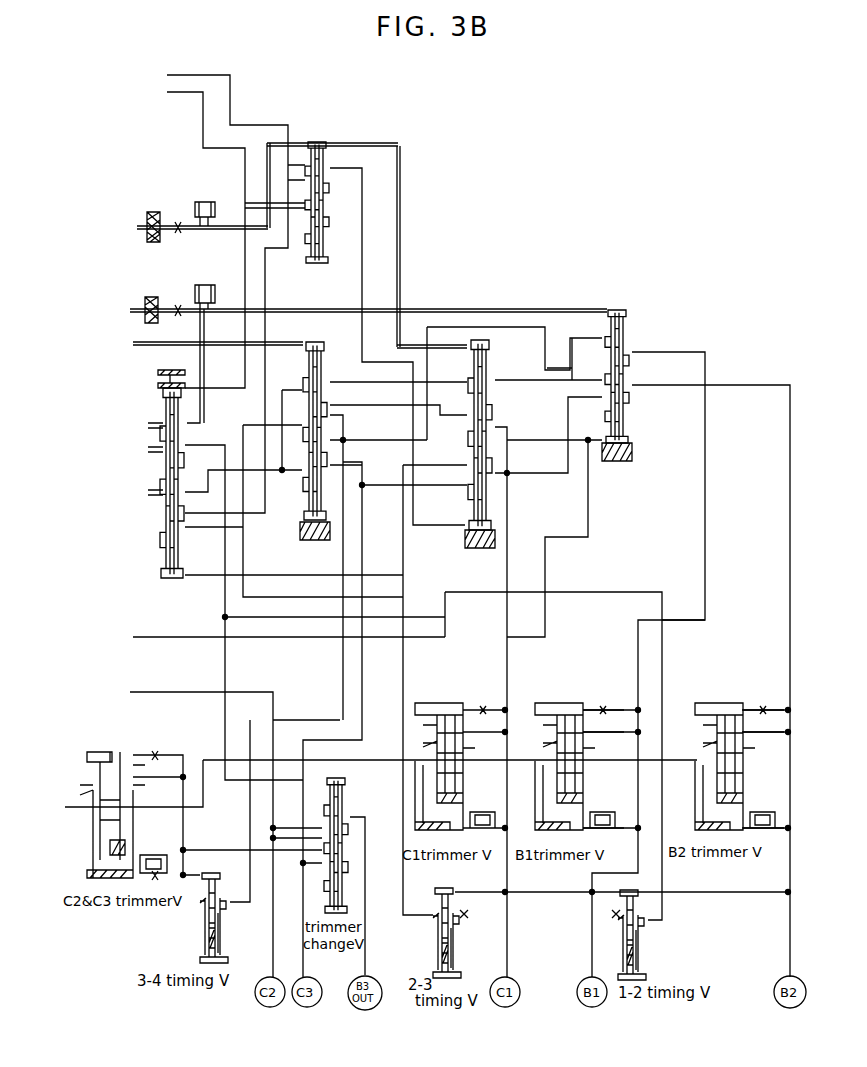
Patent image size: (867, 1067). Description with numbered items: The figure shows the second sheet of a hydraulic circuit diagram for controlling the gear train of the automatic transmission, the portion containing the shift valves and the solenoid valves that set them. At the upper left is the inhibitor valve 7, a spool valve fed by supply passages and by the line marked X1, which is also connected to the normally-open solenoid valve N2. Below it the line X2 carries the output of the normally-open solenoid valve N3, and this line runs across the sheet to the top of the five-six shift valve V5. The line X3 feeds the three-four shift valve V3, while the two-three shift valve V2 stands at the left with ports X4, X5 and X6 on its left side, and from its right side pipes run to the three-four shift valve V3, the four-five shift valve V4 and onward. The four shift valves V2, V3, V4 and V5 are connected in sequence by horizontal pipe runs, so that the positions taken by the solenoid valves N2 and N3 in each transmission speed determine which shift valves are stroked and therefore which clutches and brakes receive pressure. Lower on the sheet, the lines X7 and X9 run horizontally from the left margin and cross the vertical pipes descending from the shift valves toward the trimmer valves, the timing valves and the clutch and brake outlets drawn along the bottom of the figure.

The inhibitor valve 7 is at (323, 143).
The hydraulic pressure port X1 is at (138, 220).
The hydraulic pressure port X2 is at (138, 304).
The hydraulic pressure port X3 is at (133, 343).
The hydraulic pressure port X4 is at (150, 437).
The hydraulic pressure port X5 is at (150, 452).
The hydraulic pressure port X6 is at (150, 498).
The hydraulic pressure line X7 is at (161, 622).
The hydraulic pressure line X9 is at (161, 678).
The normally-open solenoid valve N2 is at (202, 202).
The normally-open solenoid valve N3 is at (200, 285).
The 2-3 shift valve V2 is at (160, 370).
The 3-4 shift valve V3 is at (302, 342).
The 4-5 shift valve V4 is at (492, 341).
The 5-6 shift valve V5 is at (633, 320).